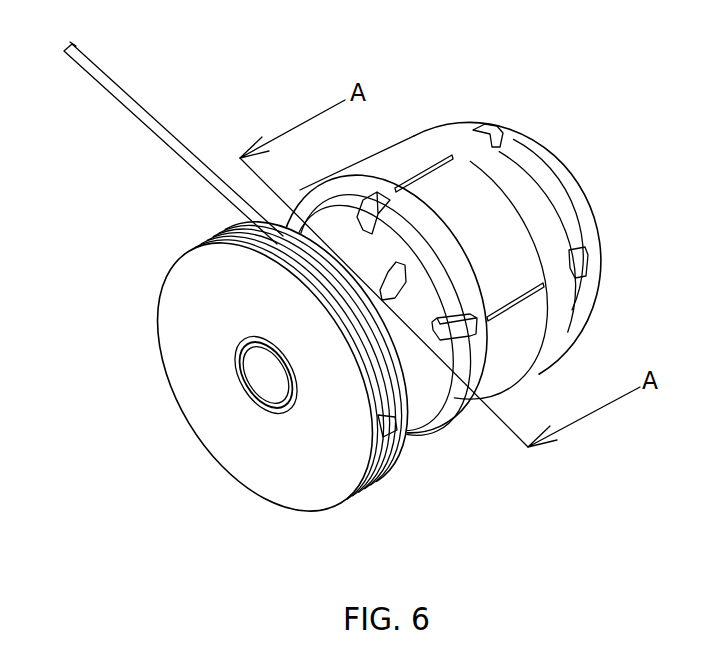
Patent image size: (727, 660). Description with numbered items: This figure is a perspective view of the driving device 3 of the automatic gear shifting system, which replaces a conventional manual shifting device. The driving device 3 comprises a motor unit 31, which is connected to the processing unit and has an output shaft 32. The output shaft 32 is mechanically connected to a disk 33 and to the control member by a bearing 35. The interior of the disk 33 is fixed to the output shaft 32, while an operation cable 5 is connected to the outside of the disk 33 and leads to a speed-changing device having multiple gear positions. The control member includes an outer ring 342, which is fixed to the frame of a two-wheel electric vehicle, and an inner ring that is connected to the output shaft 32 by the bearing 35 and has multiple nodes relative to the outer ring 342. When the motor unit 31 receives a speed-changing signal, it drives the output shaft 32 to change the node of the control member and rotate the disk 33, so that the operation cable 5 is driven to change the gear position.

The driving device 3 is at (598, 141).
The operation cable 5 is at (188, 163).
The motor unit 31 is at (405, 150).
The output shaft 32 is at (258, 366).
The disk 33 is at (300, 487).
The bearing 35 is at (247, 363).
The outer ring 342 is at (407, 372).